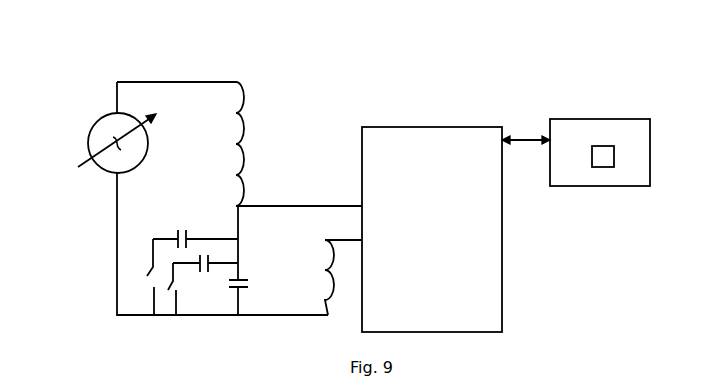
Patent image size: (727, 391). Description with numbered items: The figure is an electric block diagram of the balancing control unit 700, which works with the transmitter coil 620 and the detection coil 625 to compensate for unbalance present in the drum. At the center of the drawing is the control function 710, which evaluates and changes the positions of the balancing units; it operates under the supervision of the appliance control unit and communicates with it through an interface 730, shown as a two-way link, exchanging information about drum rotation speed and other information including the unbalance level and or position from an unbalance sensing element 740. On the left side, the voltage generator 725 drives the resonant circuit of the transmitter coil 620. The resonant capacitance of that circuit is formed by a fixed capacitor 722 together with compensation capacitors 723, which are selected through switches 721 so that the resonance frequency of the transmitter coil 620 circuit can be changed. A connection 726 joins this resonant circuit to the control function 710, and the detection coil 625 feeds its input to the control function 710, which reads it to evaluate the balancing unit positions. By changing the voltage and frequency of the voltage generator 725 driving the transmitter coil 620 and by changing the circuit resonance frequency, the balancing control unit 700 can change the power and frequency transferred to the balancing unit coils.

The balancing control unit 700 is at (366, 60).
The transmitter coil 620 is at (239, 80).
The detection coil 625 is at (330, 271).
The control function 710 is at (395, 126).
The switches 721 is at (170, 291).
The fixed capacitor 722 is at (230, 288).
The compensation capacitors 723 is at (197, 260).
The voltage generator 725 is at (82, 160).
The wire 726 is at (357, 205).
The interface 730 is at (526, 132).
The unbalance sensing element 740 is at (603, 145).